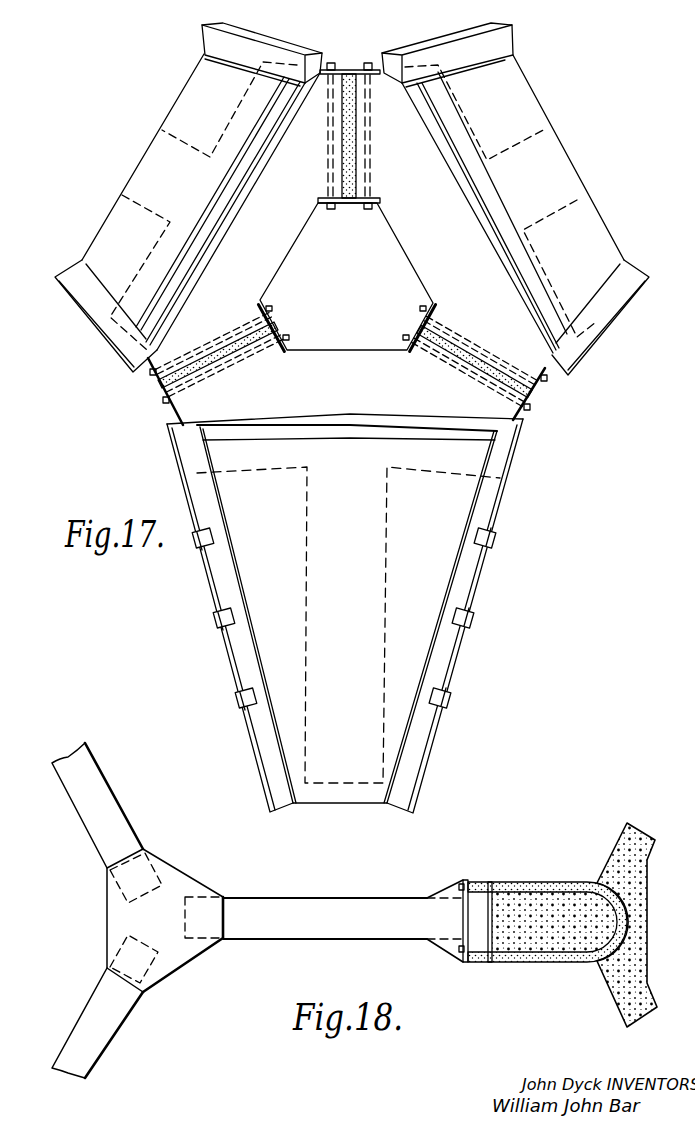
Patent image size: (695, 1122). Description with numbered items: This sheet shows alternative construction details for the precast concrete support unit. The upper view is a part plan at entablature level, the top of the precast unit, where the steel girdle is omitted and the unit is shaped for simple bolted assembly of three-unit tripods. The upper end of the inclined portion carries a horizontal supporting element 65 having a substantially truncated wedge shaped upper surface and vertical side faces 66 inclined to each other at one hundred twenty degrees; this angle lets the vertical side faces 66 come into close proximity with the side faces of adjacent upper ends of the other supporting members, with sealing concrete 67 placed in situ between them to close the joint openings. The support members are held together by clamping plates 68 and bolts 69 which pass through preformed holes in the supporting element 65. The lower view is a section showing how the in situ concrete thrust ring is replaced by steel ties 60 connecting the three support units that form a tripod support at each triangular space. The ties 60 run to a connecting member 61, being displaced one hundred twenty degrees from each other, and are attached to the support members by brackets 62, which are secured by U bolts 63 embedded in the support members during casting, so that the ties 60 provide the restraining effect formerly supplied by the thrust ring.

In FIG. 18, the steel ties 60 is at (330, 898).
In FIG. 18, the connecting member 61 is at (187, 878).
In FIG. 18, the brackets 62 is at (460, 886).
In FIG. 18, the U bolts 63 is at (556, 883).
In FIG. 17, the horizontal supporting element 65 is at (227, 393).
In FIG. 17, the vertical side faces 66 is at (238, 338).
In FIG. 17, the sealing concrete 67 is at (165, 388).
In FIG. 17, the clamping plates 68 is at (535, 392).
In FIG. 17, the bolts 69 is at (484, 387).